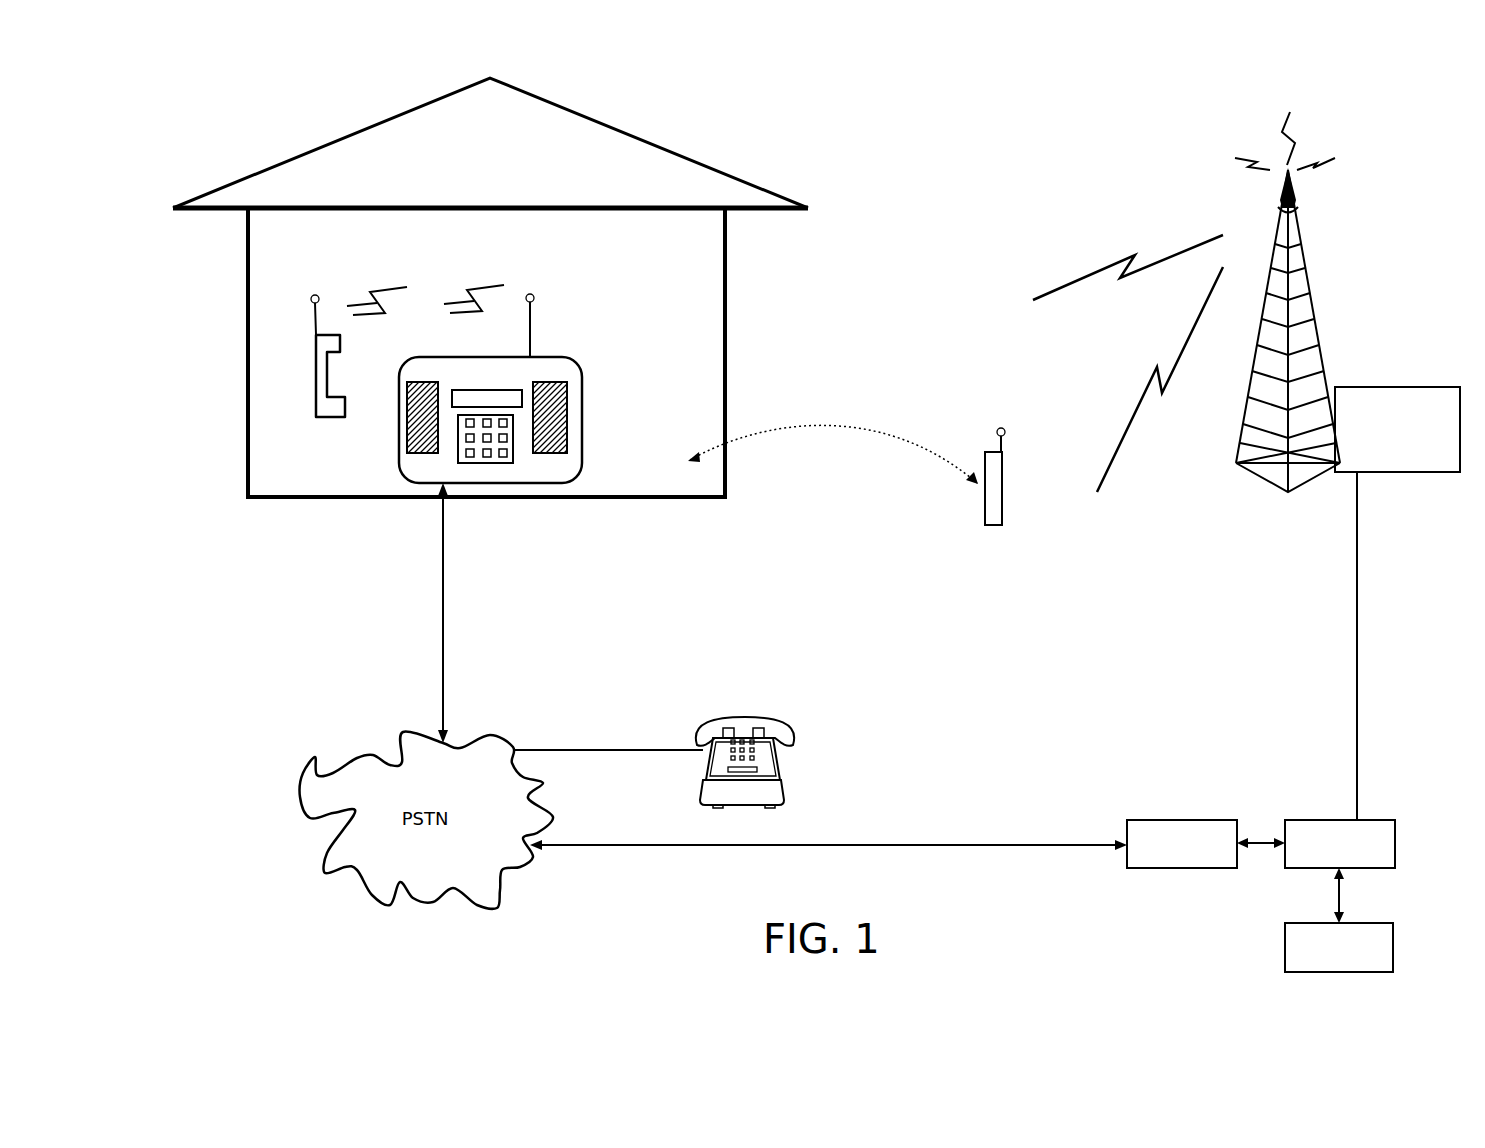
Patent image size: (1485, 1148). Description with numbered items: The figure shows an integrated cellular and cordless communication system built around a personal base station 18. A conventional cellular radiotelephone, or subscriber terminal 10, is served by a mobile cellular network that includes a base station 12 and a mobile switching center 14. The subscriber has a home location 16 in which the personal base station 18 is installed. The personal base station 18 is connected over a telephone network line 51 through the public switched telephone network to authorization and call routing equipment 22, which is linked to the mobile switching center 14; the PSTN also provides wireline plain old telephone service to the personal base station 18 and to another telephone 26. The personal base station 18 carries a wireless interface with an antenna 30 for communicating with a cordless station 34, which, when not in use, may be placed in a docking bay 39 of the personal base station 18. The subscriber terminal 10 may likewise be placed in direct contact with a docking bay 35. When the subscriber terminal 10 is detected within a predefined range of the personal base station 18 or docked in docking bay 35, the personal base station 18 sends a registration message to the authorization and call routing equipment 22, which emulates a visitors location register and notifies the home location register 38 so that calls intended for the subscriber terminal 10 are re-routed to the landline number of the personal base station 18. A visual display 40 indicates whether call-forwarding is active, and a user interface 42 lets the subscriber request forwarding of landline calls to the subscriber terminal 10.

The cellular radiotelephone 10 is at (1002, 507).
The base station 12 is at (1368, 298).
The mobile switching center 14 is at (1378, 819).
The home location 16 is at (737, 335).
The personal base station 18 is at (583, 395).
The authorization and call routing equipment 22 is at (1172, 818).
The telephone 26 is at (775, 717).
The antenna 30 is at (535, 338).
The cordless station 34 is at (317, 352).
The docking bay 35 is at (563, 410).
The home location register 38 is at (1393, 927).
The docking bay 39 is at (413, 417).
The visual display 40 is at (467, 390).
The user interface 42 is at (520, 472).
The telephone network line 51 is at (443, 652).